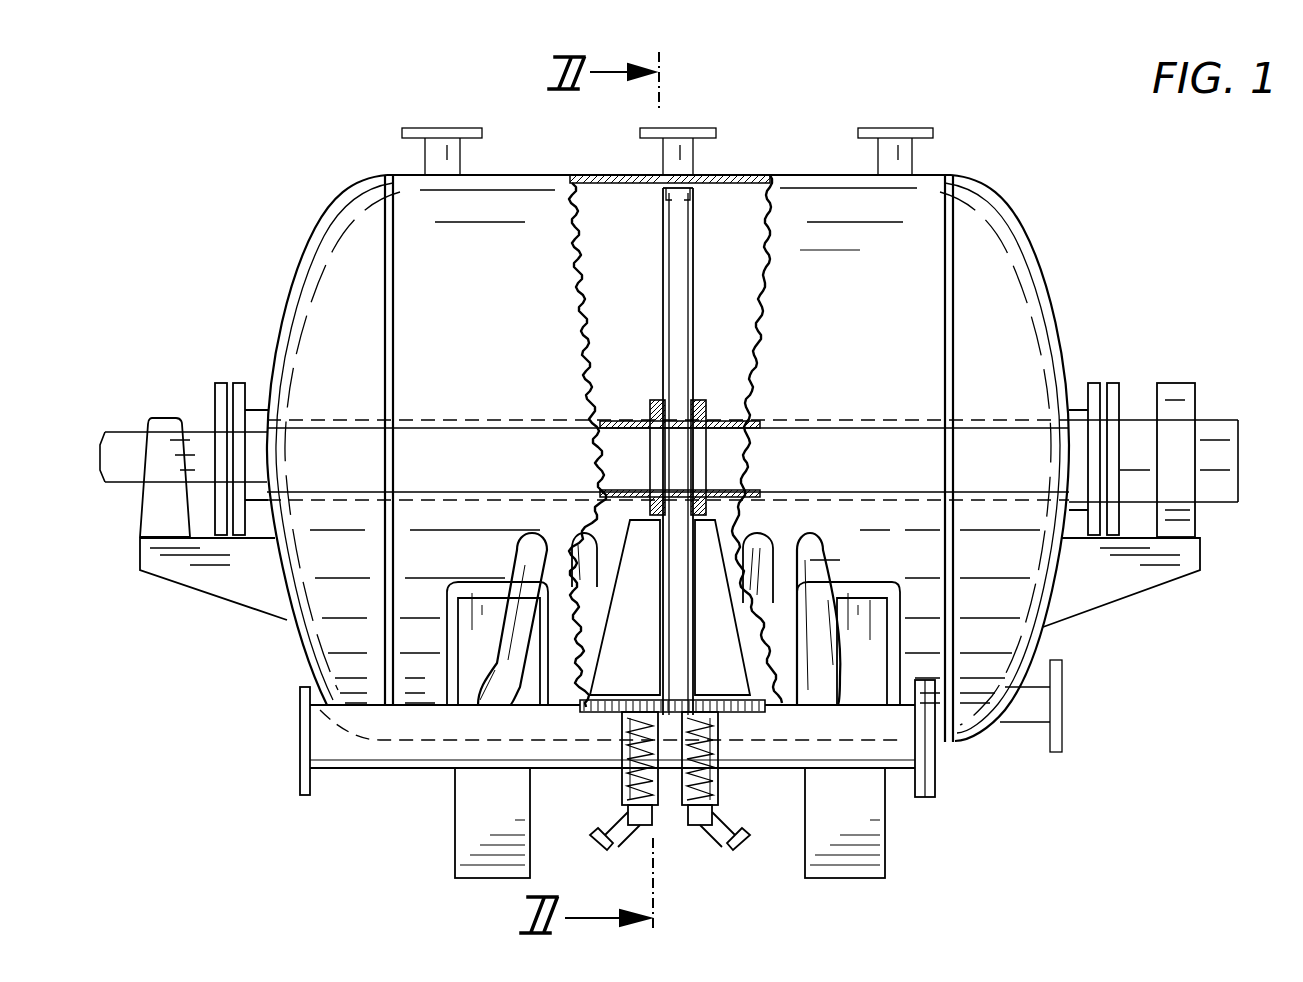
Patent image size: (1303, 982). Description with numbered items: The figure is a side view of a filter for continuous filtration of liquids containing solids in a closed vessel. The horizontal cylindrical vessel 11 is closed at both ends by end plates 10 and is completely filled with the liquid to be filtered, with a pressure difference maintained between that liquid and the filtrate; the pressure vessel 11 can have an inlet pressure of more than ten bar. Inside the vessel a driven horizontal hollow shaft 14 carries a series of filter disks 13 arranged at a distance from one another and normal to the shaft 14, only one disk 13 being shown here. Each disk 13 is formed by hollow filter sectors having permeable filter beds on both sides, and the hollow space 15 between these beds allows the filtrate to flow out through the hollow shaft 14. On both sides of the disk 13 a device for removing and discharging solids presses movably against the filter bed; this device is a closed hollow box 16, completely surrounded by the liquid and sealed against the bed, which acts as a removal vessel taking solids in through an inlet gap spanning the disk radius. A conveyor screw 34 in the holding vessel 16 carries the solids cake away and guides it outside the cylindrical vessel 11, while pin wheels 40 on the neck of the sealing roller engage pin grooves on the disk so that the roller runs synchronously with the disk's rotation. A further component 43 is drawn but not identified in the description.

The end plates 10 is at (285, 302).
The horizontal cylindrical vessel 11 is at (835, 278).
The filter disk 13 is at (700, 238).
The hollow shaft 14 is at (795, 418).
The hollow space 15 is at (676, 242).
The removal vessel box 16 is at (640, 572).
The conveyor screw 34 is at (722, 762).
The pin wheels 40 is at (605, 712).
The dip tubes 43 is at (810, 558).